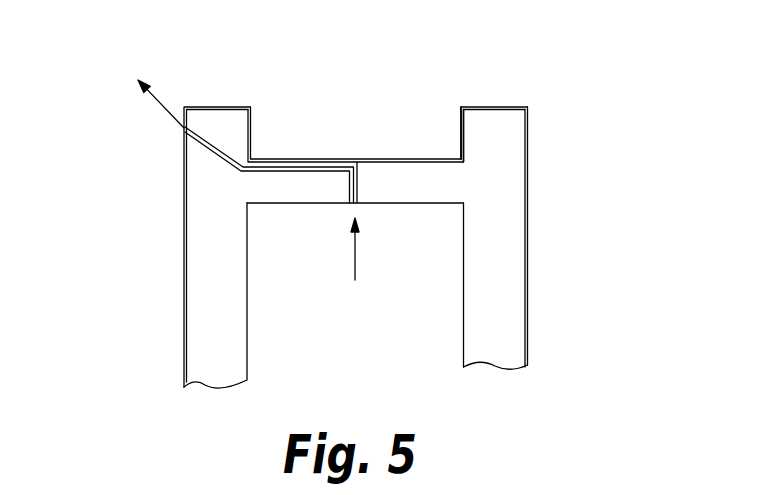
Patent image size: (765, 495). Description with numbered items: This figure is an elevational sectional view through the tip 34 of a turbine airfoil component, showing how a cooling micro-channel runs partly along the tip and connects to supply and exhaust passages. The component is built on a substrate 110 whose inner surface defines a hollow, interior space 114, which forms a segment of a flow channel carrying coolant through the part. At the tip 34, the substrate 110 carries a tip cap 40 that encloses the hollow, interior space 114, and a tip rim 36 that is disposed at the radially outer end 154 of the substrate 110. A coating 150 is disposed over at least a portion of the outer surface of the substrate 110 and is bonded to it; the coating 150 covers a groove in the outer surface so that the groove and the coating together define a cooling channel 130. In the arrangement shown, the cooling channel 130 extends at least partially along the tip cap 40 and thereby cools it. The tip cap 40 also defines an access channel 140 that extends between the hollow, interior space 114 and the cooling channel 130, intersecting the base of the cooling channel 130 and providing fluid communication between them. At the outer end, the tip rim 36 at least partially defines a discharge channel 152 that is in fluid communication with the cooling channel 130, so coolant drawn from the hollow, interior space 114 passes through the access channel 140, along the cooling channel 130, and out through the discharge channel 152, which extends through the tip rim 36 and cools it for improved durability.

The tip 34 is at (546, 98).
The tip rim 36 is at (493, 140).
The tip cap 40 is at (374, 150).
The substrate 110 is at (490, 270).
The hollow, interior space 114 is at (270, 332).
The cooling channel 130 is at (220, 154).
The access channel 140 is at (357, 187).
The coating 150 is at (185, 300).
The discharge channel 152 is at (205, 150).
The radially outer end 154 is at (488, 159).